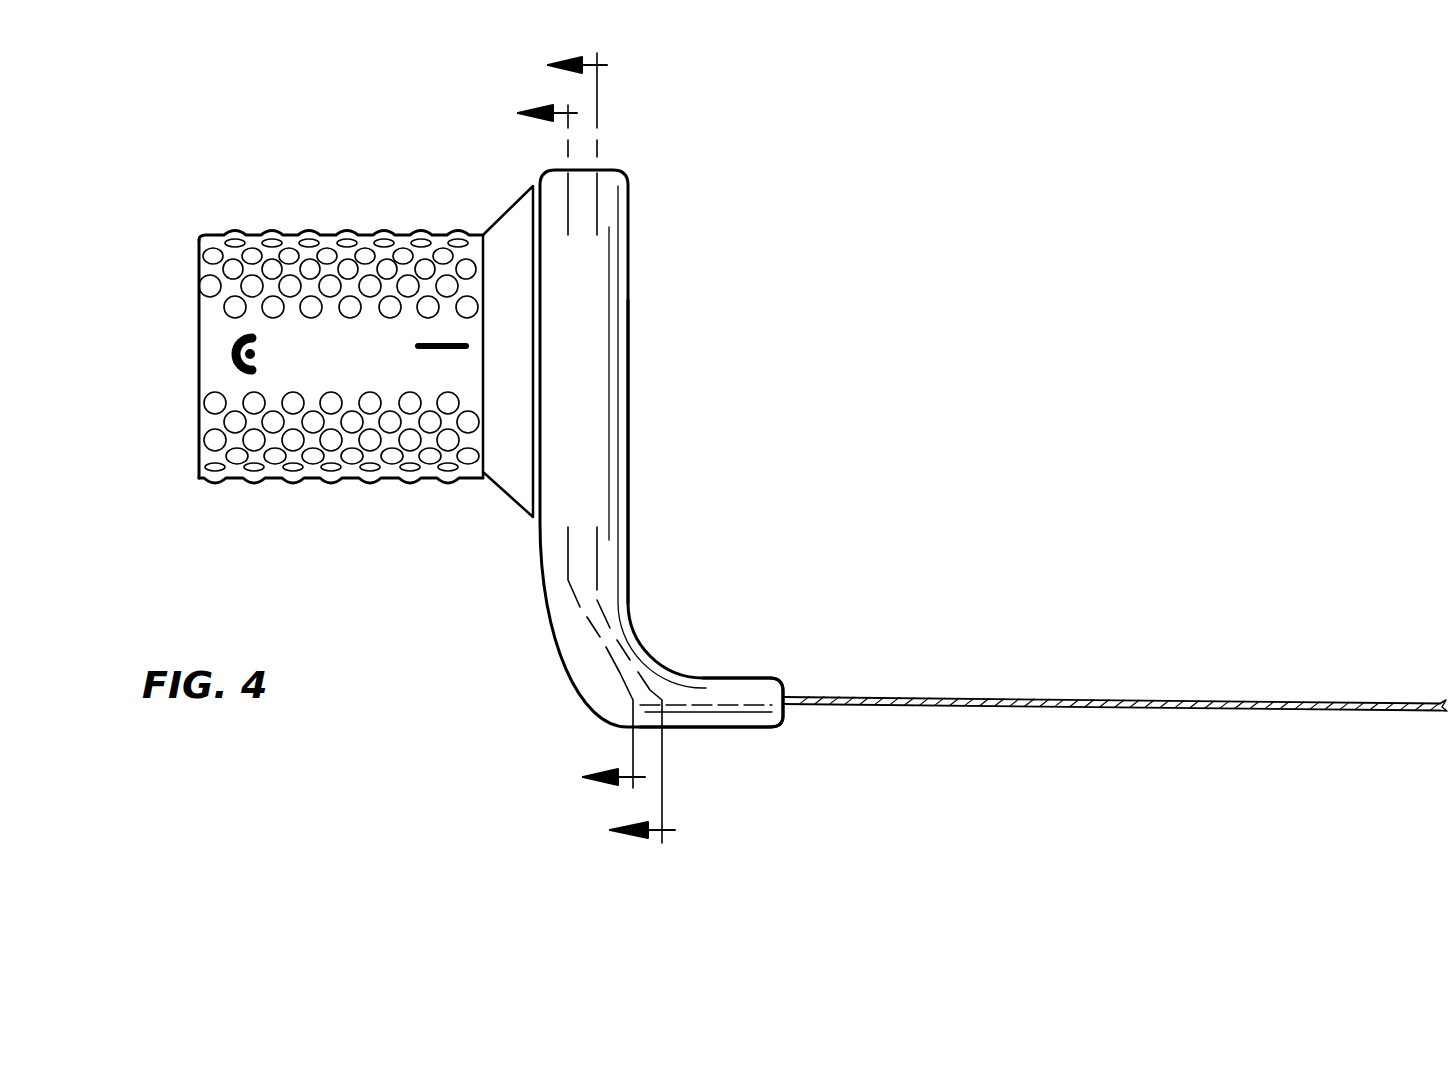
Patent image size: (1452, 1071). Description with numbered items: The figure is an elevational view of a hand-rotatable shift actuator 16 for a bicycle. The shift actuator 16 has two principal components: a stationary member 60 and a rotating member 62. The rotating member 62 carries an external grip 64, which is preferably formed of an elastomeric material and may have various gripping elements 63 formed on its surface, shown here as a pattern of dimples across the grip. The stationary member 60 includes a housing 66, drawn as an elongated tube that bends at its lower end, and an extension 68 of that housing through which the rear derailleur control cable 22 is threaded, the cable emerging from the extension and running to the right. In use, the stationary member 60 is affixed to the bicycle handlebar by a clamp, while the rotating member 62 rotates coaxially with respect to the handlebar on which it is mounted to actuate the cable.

The shift actuator 16 is at (858, 187).
The rear derailleur control cable 22 is at (1022, 698).
The stationary member 60 is at (660, 355).
The rotating member 62 is at (265, 232).
The gripping elements 63 is at (213, 290).
The external grip 64 is at (238, 470).
The housing 66 is at (617, 488).
The extension 68 is at (735, 688).